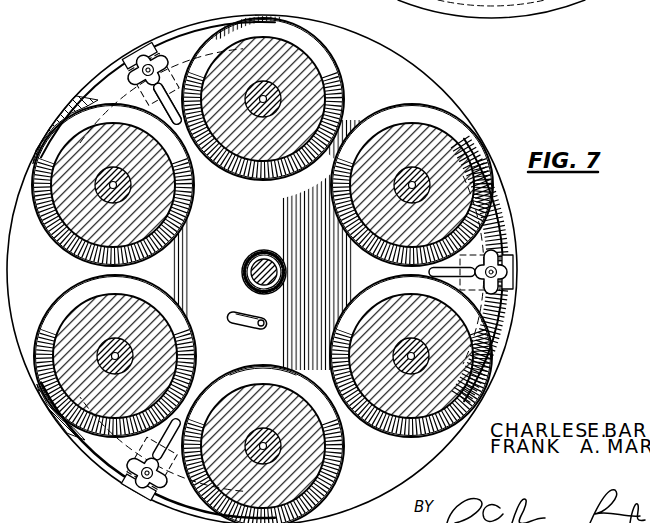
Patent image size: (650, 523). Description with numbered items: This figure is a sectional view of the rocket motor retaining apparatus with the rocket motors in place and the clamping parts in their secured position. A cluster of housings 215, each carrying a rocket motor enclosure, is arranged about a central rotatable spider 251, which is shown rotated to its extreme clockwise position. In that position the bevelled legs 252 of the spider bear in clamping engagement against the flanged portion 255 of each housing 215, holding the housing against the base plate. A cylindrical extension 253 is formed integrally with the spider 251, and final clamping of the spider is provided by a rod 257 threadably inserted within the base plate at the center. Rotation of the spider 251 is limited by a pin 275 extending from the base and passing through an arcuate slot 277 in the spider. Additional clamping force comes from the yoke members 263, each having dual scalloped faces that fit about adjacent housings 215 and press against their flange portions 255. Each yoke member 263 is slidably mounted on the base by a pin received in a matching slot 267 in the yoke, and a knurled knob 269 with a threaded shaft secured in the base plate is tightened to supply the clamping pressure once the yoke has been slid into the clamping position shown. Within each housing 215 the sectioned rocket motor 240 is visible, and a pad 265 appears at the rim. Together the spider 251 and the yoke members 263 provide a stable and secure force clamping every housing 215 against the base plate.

The housing 215 is at (311, 53).
The roller 240 is at (413, 167).
The rotatable spider 251 is at (212, 248).
The legs of the spider 252 is at (268, 372).
The cylindrical extension 253 is at (257, 252).
The flanged portion 255 is at (443, 110).
The rod 257 is at (251, 272).
The yoke member 263 is at (187, 36).
The pad 265 is at (104, 112).
The slot 267 is at (155, 52).
The knurled knob 269 is at (142, 58).
The pin 275 is at (280, 312).
The arcuate slot 277 is at (247, 306).